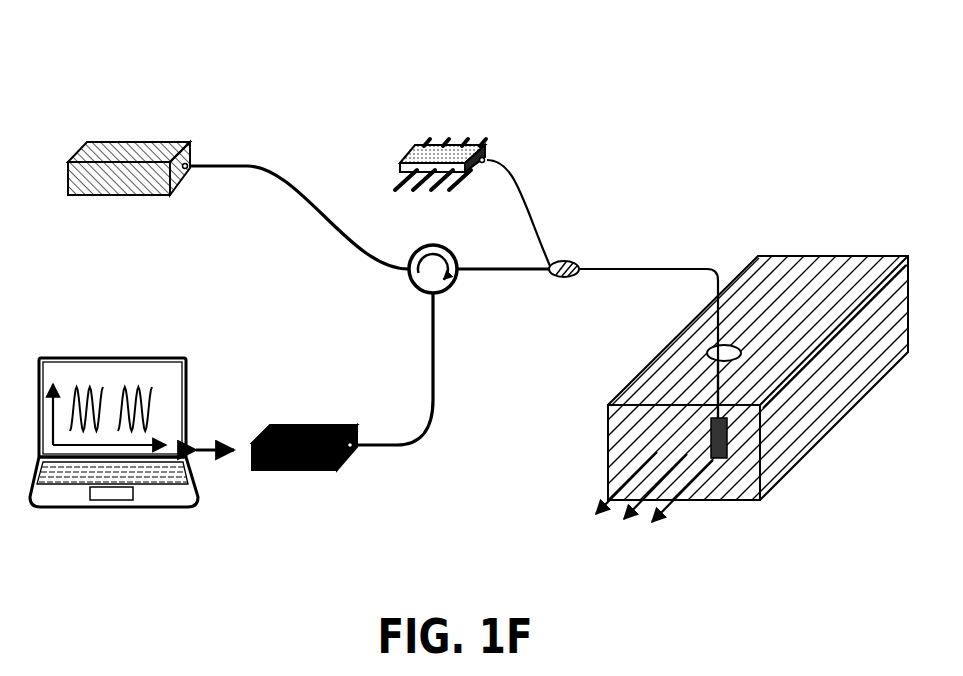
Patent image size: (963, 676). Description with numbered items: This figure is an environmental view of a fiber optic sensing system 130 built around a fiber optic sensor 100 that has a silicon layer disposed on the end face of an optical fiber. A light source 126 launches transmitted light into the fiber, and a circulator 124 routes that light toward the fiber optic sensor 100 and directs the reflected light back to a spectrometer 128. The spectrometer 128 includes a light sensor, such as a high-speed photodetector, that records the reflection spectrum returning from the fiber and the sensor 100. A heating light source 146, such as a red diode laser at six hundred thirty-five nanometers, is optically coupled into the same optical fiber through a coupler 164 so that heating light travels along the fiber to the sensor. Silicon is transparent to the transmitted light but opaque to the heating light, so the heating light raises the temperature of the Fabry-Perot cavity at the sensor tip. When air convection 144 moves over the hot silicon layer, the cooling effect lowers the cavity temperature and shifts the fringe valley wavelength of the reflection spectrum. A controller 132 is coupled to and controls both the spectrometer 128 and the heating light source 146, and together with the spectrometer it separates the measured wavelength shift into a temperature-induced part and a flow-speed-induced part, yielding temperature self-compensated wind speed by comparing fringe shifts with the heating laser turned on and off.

The fiber optic sensing system 130 is at (116, 72).
The light source 126 is at (158, 142).
The heating light source 146 is at (458, 142).
The circulator 124 is at (452, 286).
The coupler 164 is at (563, 260).
The spectrometer 128 is at (315, 472).
The controller 132 is at (148, 510).
The fiber optic sensor 100 is at (729, 428).
The air convection 144 is at (654, 502).